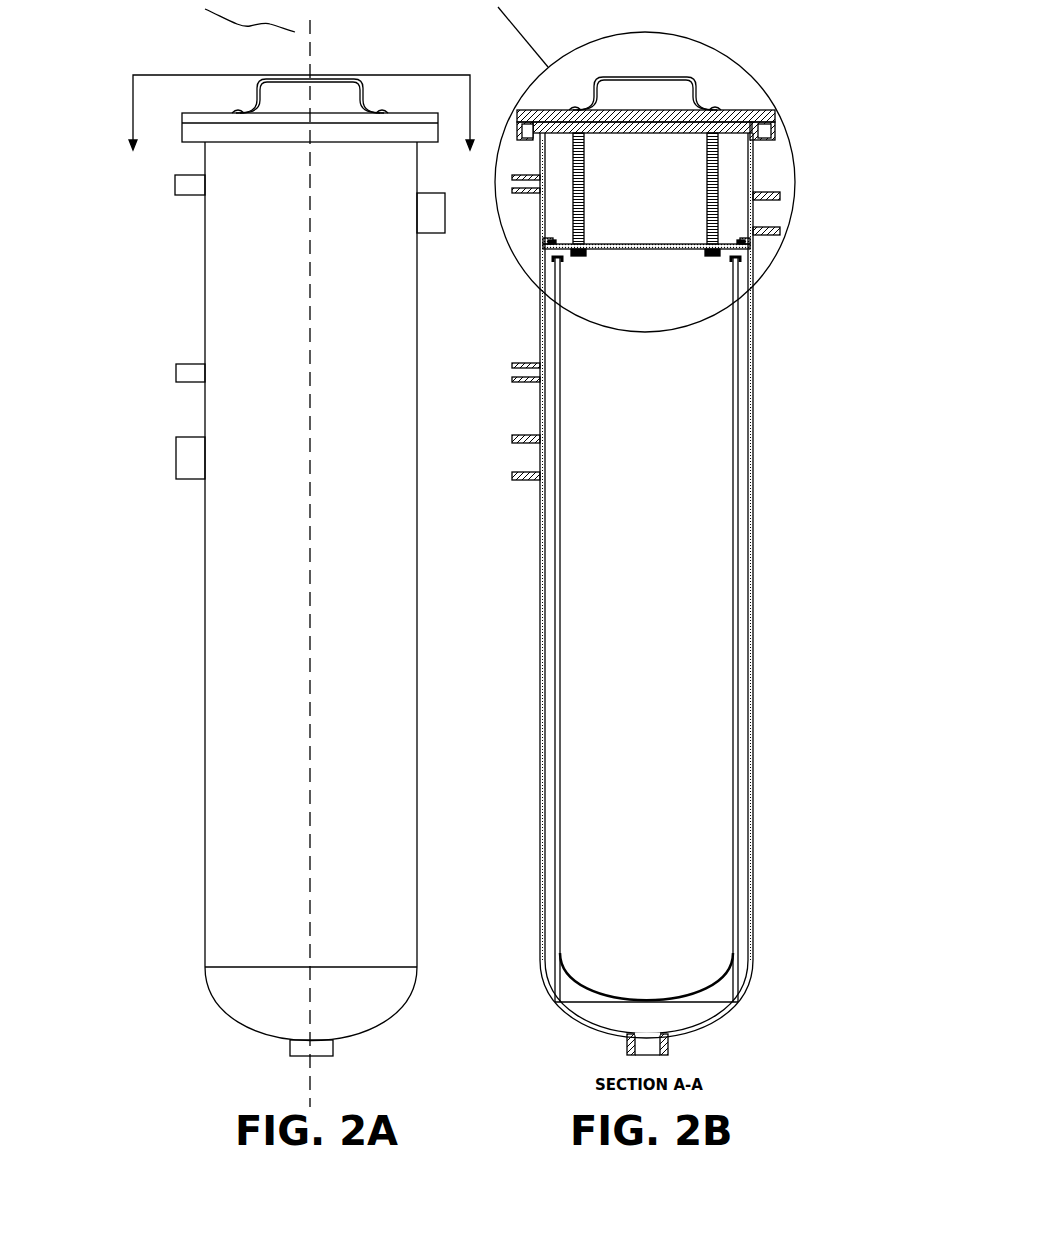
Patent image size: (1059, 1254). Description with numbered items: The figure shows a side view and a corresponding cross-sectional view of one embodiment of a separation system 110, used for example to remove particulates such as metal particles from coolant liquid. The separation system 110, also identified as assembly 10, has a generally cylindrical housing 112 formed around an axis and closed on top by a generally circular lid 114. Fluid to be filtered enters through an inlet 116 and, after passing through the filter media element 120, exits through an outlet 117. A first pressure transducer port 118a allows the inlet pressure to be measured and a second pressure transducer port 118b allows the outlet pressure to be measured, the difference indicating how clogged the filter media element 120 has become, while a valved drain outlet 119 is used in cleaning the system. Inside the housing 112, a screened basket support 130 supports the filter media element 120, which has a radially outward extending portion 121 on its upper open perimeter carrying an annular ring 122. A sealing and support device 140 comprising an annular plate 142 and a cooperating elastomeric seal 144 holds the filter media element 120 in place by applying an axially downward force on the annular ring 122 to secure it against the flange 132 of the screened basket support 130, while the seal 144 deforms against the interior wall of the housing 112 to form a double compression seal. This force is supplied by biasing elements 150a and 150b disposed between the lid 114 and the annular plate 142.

In FIG. 2A, the filter vessel assembly 10 is at (253, 553).
In FIG. 2B, the filter vessel assembly 10 is at (657, 540).
In FIG. 2A, the separation system 110 is at (246, 781).
In FIG. 2B, the separation system 110 is at (594, 780).
In FIG. 2A, the housing 112 is at (204, 270).
In FIG. 2B, the housing 112 is at (540, 810).
In FIG. 2A, the lid 114 is at (175, 116).
In FIG. 2B, the lid 114 is at (760, 108).
In FIG. 2A, the inlet 116 is at (435, 228).
In FIG. 2B, the inlet 116 is at (772, 212).
In FIG. 2A, the outlet 117 is at (183, 458).
In FIG. 2B, the outlet 117 is at (500, 460).
In FIG. 2A, the first pressure transducer port 118a is at (175, 195).
In FIG. 2B, the first pressure transducer port 118a is at (512, 195).
In FIG. 2A, the second pressure transducer port 118b is at (176, 382).
In FIG. 2B, the second pressure transducer port 118b is at (488, 374).
In FIG. 2A, the valved drain outlet 119 is at (288, 1055).
In FIG. 2B, the valved drain outlet 119 is at (627, 1048).
In FIG. 2B, the filter media element 120 is at (575, 745).
In FIG. 2B, the radially outward extending portion 121 is at (732, 238).
In FIG. 2B, the annular ring 122 is at (740, 257).
In FIG. 2B, the screened basket support 130 is at (753, 447).
In FIG. 2B, the flange 132 is at (744, 266).
In FIG. 2B, the sealing and support device 140 is at (635, 263).
In FIG. 2B, the annular plate 142 is at (683, 600).
In FIG. 2B, the seal 144 is at (610, 294).
In FIG. 2B, the biasing element 150a is at (560, 172).
In FIG. 2B, the biasing element 150b is at (722, 184).